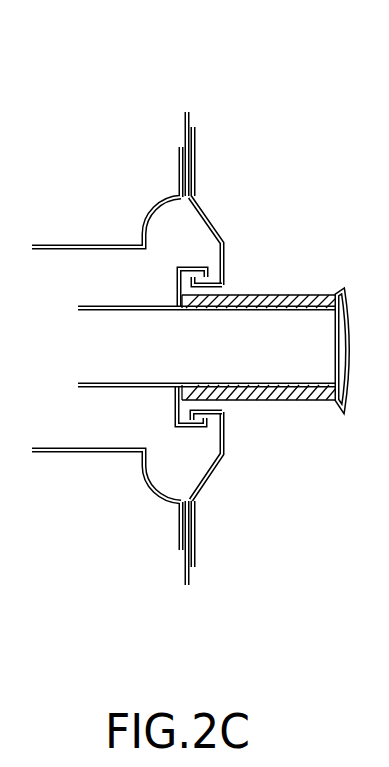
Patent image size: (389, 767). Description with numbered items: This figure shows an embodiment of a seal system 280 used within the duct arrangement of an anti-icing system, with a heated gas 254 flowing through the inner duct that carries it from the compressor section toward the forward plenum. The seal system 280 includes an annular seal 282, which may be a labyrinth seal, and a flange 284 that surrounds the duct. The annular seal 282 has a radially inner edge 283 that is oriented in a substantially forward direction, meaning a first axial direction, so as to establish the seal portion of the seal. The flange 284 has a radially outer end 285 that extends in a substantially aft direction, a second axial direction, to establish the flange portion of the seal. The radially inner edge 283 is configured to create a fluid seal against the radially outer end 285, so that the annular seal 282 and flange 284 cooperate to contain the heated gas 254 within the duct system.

The heated gas 254 is at (180, 348).
The seal system 280 is at (268, 116).
The annular seal 282 is at (200, 208).
The radially inner edge 283 is at (222, 283).
The flange 284 is at (208, 258).
The radially outer end 285 is at (222, 252).